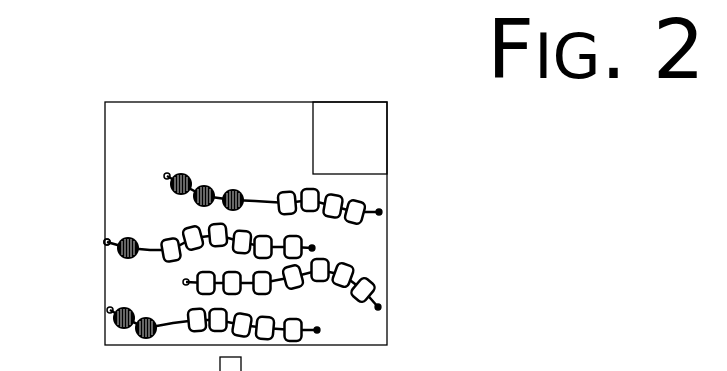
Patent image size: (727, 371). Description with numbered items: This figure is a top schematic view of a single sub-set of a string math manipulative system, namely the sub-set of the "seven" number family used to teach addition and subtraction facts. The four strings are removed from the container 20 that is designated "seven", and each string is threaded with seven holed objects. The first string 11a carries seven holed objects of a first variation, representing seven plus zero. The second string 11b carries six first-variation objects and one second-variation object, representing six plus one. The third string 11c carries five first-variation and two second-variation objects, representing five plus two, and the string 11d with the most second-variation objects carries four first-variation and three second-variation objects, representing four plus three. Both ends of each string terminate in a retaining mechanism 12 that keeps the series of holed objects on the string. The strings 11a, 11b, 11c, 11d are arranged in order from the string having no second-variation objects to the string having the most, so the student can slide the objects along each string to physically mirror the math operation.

The container 20 is at (387, 248).
The first string 11a is at (372, 296).
The second string 11b is at (146, 250).
The third string 11c is at (173, 323).
The fourth string 11d is at (255, 198).
The retaining mechanism 12 is at (106, 237).